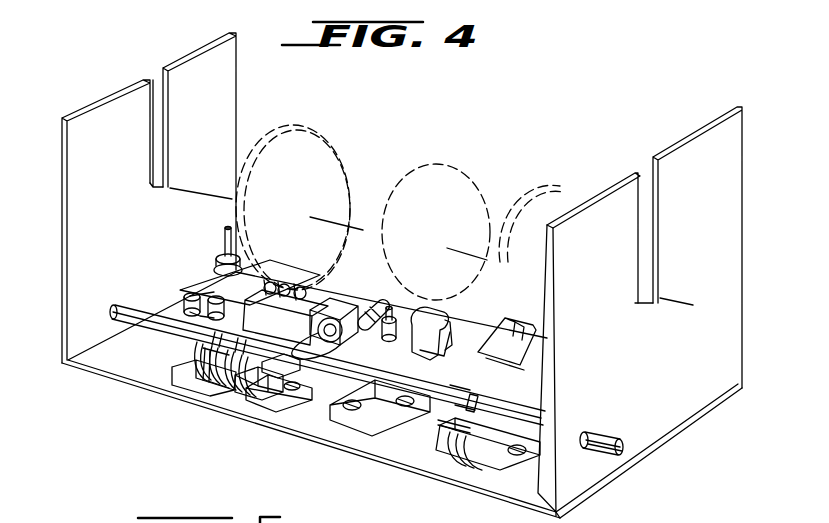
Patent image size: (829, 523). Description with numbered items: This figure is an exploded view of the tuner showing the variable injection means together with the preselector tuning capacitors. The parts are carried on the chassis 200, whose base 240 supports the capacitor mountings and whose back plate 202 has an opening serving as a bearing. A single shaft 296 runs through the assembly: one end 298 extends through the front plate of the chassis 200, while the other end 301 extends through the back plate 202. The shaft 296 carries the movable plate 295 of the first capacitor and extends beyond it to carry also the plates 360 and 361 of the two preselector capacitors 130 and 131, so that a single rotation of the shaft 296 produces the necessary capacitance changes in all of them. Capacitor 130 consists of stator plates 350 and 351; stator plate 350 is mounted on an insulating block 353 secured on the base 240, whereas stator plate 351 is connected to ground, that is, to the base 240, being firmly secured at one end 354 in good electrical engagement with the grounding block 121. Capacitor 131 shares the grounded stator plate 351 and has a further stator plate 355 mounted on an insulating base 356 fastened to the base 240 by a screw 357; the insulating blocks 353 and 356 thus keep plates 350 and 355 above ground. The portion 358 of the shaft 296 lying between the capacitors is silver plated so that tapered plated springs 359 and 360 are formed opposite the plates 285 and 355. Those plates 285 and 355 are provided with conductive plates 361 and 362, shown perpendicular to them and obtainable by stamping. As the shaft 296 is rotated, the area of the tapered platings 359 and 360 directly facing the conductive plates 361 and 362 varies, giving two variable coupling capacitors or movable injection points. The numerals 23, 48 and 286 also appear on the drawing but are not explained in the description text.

The chassis 200 is at (742, 256).
The back plate 202 is at (68, 207).
The base 240 is at (506, 496).
The shaft end 301 is at (120, 307).
The bolt terminal 23 is at (199, 268).
The preselector tuning capacitor 130 is at (179, 351).
The end of stator plate 354 is at (292, 295).
The grounding block 121 is at (338, 300).
The stator plate 355 is at (318, 346).
The resistor / terminal 48 is at (377, 330).
The shaft 296 is at (472, 387).
The plated spring 359 is at (468, 402).
The plated spring / movable plate 360 is at (203, 456).
The insulating block 353 is at (183, 381).
The stator plate 350 is at (203, 383).
The stator plate 351 is at (222, 388).
The conductive plate 361 is at (233, 396).
The preselector tuning capacitor 131 is at (249, 401).
The conductive plate 362 is at (272, 408).
The insulating base 356 is at (270, 394).
The screw 357 is at (284, 378).
The silver-plated shaft portion 358 is at (398, 404).
The plate of capacitor 285 is at (455, 433).
The screw 286 is at (500, 446).
The movable plate 295 is at (457, 452).
The shaft end 298 is at (614, 432).